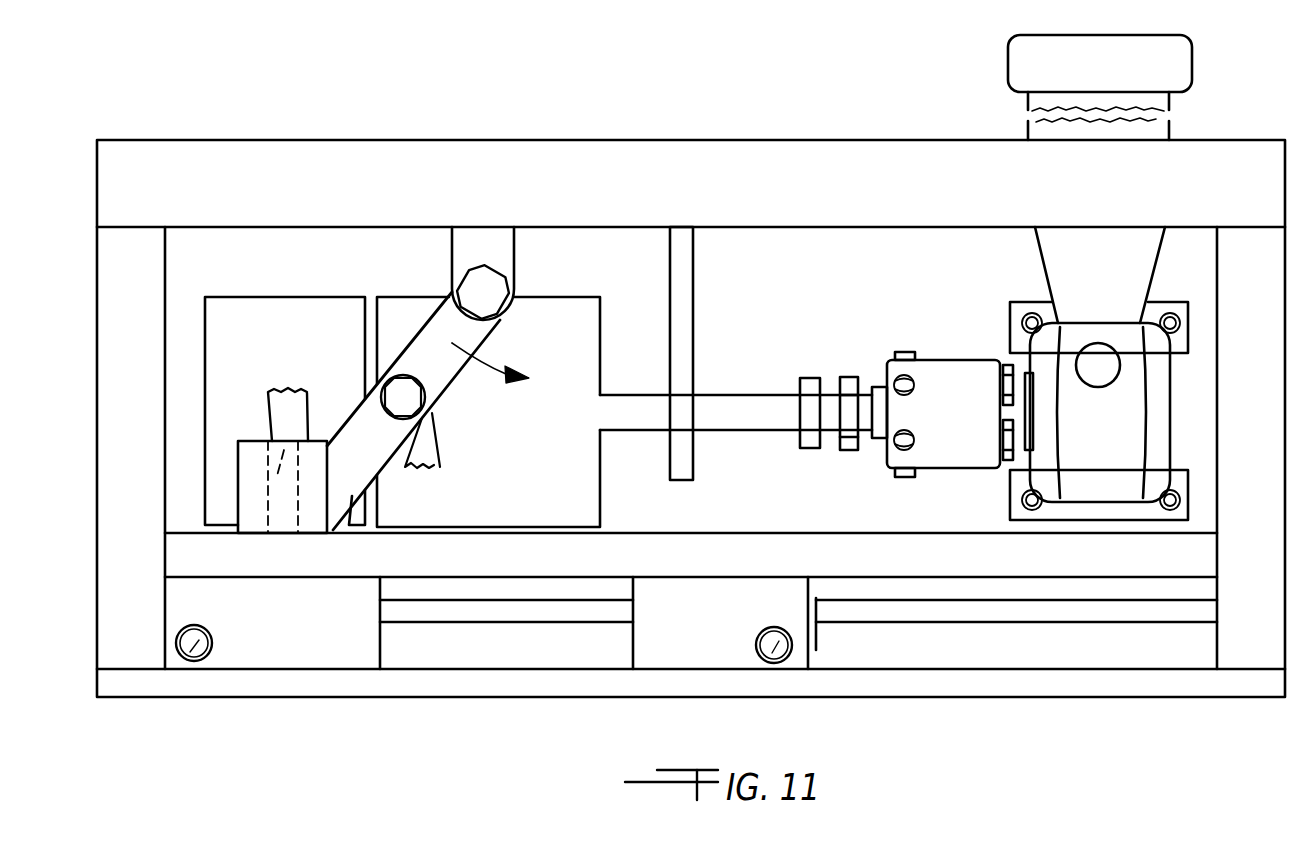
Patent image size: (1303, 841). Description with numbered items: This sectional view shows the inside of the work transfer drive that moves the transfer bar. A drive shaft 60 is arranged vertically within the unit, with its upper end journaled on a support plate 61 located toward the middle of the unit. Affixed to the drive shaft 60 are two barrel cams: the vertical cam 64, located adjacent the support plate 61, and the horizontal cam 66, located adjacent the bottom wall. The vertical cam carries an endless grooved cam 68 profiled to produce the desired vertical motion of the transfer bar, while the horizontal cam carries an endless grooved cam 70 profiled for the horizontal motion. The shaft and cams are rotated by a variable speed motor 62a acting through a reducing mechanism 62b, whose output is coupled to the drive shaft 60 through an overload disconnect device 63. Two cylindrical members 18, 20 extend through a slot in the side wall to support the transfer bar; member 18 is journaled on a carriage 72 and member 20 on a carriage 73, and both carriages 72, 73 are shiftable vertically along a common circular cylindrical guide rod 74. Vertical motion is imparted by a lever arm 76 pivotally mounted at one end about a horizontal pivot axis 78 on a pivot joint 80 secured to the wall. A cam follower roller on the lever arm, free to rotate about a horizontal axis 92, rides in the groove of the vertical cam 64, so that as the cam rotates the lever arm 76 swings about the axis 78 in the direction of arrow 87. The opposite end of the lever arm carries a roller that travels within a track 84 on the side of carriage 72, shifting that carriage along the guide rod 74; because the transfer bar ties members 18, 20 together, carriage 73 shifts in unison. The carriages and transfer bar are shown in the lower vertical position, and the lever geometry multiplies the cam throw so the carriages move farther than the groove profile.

The cylindrical member 18 is at (196, 650).
The cylindrical member 20 is at (775, 645).
The drive shaft 60 is at (712, 417).
The support plate 61 is at (693, 352).
The variable speed motor 62a is at (1163, 117).
The reducing mechanism 62b is at (1170, 424).
The overload disconnect device 63 is at (930, 360).
The barrel cam (vertical cam) 64 is at (600, 298).
The barrel cam (horizontal cam) 66 is at (318, 297).
The endless grooved cam 68 is at (425, 441).
The endless grooved cam 70 is at (306, 407).
The carriage 72 is at (315, 623).
The carriage 73 is at (735, 623).
The guide rod 74 is at (496, 608).
The lever arm 76 is at (458, 333).
The pivot axis 78 is at (487, 290).
The pivot joint 80 is at (533, 274).
The track 84 is at (276, 426).
The arrow 87 is at (481, 364).
The horizontal axis 92 is at (410, 398).